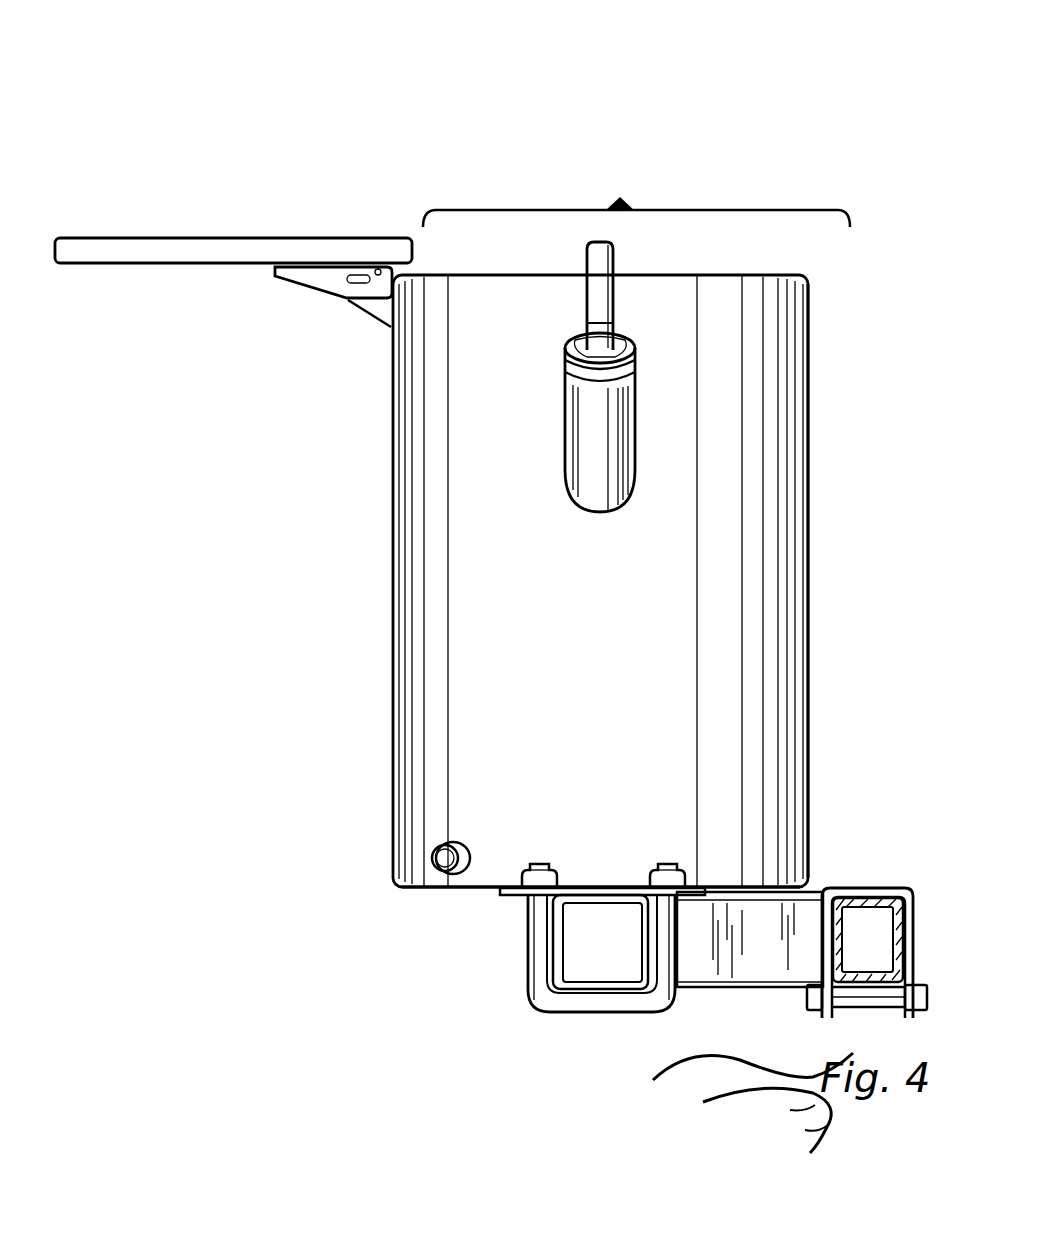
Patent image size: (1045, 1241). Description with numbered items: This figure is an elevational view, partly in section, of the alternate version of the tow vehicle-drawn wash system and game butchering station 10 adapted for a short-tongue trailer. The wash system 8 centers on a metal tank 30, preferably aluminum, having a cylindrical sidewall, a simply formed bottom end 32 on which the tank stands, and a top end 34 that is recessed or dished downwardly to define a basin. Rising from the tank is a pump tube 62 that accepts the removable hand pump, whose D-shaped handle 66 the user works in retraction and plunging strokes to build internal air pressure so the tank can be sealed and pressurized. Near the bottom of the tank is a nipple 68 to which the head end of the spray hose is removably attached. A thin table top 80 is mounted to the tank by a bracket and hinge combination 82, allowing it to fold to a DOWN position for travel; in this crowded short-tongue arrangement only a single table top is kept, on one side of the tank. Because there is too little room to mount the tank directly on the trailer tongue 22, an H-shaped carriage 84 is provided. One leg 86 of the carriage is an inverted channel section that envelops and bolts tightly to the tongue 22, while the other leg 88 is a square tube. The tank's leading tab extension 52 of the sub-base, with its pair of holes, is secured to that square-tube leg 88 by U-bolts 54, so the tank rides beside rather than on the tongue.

The tow vehicle-drawn wash system and game butchering station 10 is at (291, 90).
The wash system 8 is at (636, 188).
The trailer tongue 22 is at (835, 925).
The tank 30 is at (590, 694).
The bottom end 32 is at (414, 893).
The top end 34 is at (778, 252).
The tab extension 52 is at (507, 897).
The U-bolt 54 is at (527, 955).
The pump tube 62 is at (585, 434).
The handle 66 is at (598, 299).
The nipple 68 is at (457, 848).
The table top 80 is at (162, 255).
The bracket and hinge combination 82 is at (332, 295).
The H-shaped carriage 84 is at (735, 990).
The leg 86 is at (857, 892).
The leg 88 is at (566, 957).